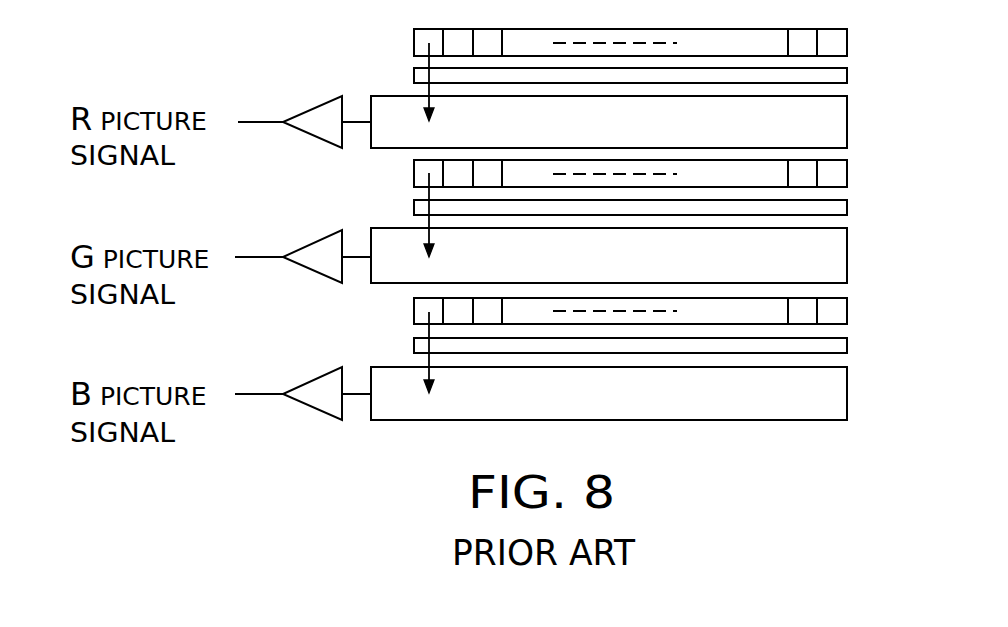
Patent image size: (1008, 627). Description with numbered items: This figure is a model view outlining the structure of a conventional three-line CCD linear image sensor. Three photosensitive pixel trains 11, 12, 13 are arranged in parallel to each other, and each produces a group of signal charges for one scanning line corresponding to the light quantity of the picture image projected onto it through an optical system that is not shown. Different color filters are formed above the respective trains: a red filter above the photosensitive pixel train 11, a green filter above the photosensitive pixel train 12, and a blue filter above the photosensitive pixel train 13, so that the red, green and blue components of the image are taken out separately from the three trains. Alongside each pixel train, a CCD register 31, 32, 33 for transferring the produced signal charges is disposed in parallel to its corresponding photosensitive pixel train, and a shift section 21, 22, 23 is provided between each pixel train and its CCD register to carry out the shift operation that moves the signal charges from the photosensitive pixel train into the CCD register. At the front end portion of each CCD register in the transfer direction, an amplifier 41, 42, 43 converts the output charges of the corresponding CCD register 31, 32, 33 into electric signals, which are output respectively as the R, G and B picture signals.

The photosensitive pixel train 11 is at (848, 42).
The shift section 21 is at (848, 76).
The CCD register 31 is at (848, 124).
The amplifier 41 is at (312, 106).
The photosensitive pixel train 12 is at (848, 173).
The shift section 22 is at (848, 208).
The CCD register 32 is at (848, 256).
The amplifier 42 is at (311, 243).
The photosensitive pixel train 13 is at (848, 311).
The shift section 23 is at (848, 345).
The CCD register 33 is at (848, 393).
The amplifier 43 is at (311, 381).